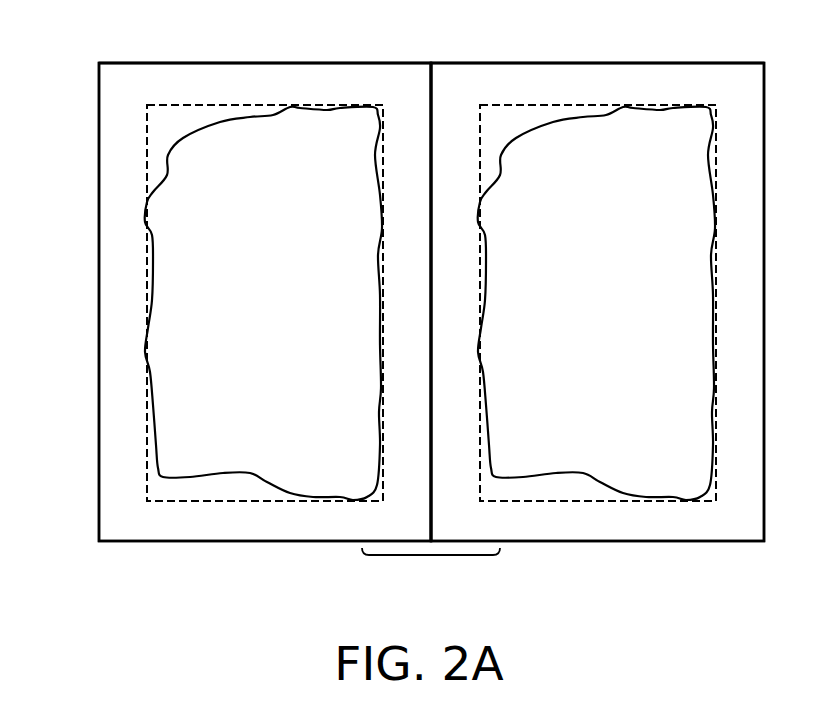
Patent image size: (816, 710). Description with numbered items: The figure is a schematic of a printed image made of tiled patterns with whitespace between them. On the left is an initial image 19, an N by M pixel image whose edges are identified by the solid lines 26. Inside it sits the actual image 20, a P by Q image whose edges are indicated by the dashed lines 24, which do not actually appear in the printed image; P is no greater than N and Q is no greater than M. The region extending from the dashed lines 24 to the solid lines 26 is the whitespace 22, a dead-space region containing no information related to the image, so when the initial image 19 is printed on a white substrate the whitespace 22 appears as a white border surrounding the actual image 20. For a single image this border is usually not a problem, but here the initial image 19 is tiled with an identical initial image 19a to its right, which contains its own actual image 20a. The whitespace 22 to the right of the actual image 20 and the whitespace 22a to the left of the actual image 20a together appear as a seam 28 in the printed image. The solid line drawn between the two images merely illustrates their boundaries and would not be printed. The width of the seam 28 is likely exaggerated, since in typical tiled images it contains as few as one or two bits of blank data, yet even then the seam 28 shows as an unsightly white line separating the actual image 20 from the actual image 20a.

The initial image 19 is at (159, 541).
The identical initial image 19a is at (632, 541).
The actual image 20 is at (285, 312).
The actual image 20a is at (618, 312).
The whitespace 22 is at (133, 77).
The whitespace 22a is at (467, 87).
The dashed lines 24 is at (187, 105).
The solid lines 26 is at (353, 62).
The seam 28 is at (430, 556).